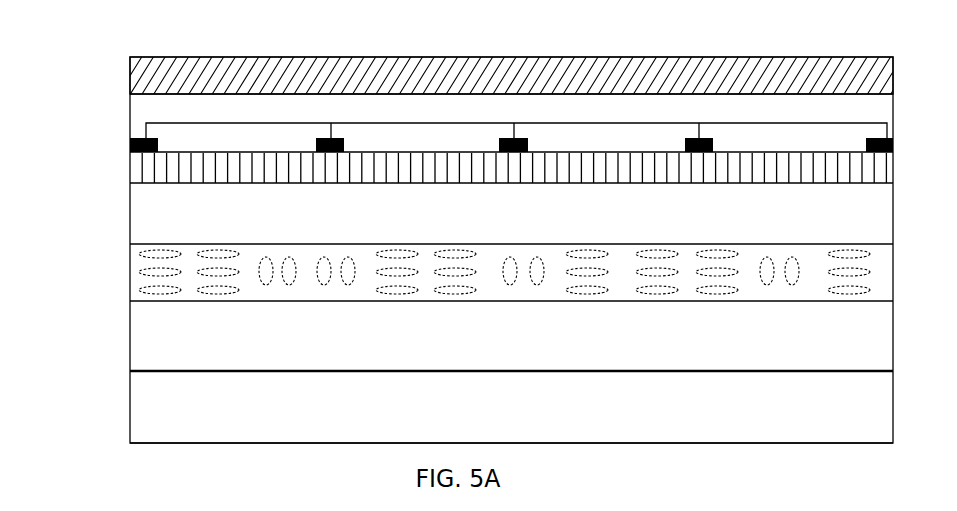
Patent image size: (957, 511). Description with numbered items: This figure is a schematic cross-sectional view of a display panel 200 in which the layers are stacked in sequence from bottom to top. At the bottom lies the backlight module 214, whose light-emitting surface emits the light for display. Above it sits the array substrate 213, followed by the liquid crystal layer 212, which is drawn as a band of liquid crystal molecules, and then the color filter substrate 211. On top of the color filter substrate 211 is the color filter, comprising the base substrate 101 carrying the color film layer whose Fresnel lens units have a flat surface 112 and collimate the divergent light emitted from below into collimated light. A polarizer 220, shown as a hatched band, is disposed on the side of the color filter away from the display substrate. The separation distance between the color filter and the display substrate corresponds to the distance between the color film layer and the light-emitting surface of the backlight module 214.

The display panel 200 is at (888, 22).
The polarizer 220 is at (160, 72).
The flat surface 112 is at (144, 110).
The base substrate 101 is at (142, 175).
The color filter substrate 211 is at (167, 203).
The liquid crystal layer 212 is at (160, 255).
The array substrate 213 is at (158, 336).
The backlight module 214 is at (158, 405).